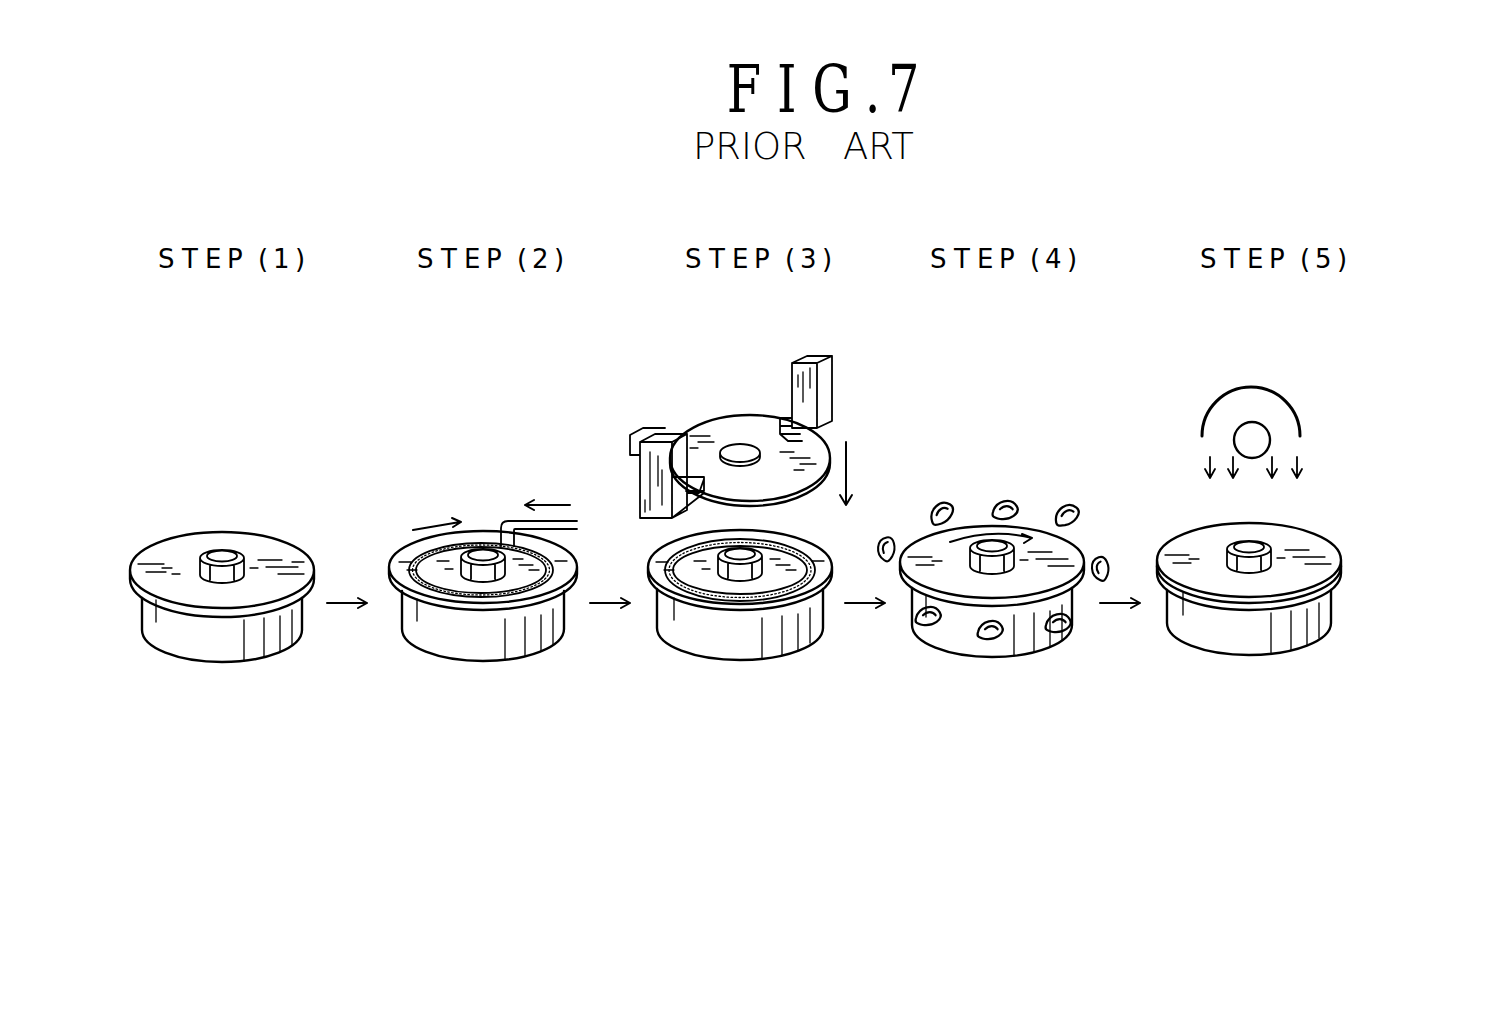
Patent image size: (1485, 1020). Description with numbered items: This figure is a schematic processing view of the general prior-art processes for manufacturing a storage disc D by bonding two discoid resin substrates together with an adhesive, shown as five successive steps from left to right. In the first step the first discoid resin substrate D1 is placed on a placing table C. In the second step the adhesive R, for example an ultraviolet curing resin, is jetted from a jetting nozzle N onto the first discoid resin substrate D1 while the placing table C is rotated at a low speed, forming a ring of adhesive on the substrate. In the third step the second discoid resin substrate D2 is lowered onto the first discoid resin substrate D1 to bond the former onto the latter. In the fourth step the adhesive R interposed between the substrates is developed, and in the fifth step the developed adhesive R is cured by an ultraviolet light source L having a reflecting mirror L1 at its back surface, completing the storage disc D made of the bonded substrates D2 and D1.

The first discoid resin substrate D1 is at (257, 542).
The placing table C is at (187, 648).
The adhesive R is at (421, 560).
The jetting nozzle N is at (539, 504).
The second discoid resin substrate D2 is at (720, 422).
The reflecting mirror L1 is at (1288, 401).
The ultraviolet light source L is at (1233, 444).
The storage disc D is at (1397, 490).